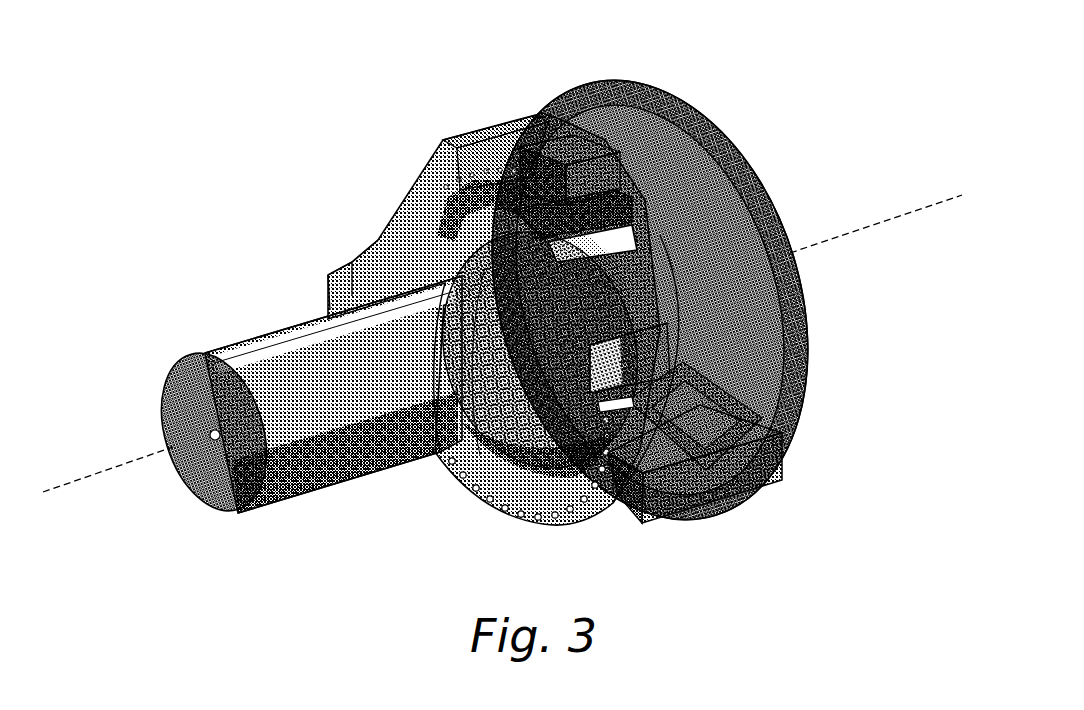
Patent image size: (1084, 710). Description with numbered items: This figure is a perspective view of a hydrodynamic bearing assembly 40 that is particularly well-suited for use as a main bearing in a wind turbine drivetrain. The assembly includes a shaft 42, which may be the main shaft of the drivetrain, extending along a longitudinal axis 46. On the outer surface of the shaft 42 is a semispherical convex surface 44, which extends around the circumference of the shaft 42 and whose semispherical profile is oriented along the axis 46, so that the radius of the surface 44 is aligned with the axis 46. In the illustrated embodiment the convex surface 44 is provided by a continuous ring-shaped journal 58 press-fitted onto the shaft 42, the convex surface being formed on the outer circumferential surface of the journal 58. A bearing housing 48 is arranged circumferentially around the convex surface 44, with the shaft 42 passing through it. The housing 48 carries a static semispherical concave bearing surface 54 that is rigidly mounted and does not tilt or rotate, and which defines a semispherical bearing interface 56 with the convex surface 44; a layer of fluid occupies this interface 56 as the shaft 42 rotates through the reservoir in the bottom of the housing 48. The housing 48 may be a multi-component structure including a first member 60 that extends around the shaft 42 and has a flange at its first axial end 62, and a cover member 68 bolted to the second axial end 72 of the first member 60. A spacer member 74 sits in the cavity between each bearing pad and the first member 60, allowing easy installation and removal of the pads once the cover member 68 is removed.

The hydrodynamic bearing assembly 40 is at (502, 300).
The shaft 42 is at (262, 330).
The semispherical convex surface 44 is at (440, 253).
The longitudinal axis 46 is at (110, 468).
The bearing housing 48 is at (493, 333).
The static semispherical concave bearing surface 54 is at (623, 340).
The semispherical bearing interface 56 is at (597, 224).
The ring-shaped journal 58 is at (556, 290).
The first member 60 is at (760, 496).
The first axial end 62 is at (650, 300).
The cover member 68 is at (482, 503).
The second axial end 72 is at (420, 190).
The spacer member 74 is at (652, 94).